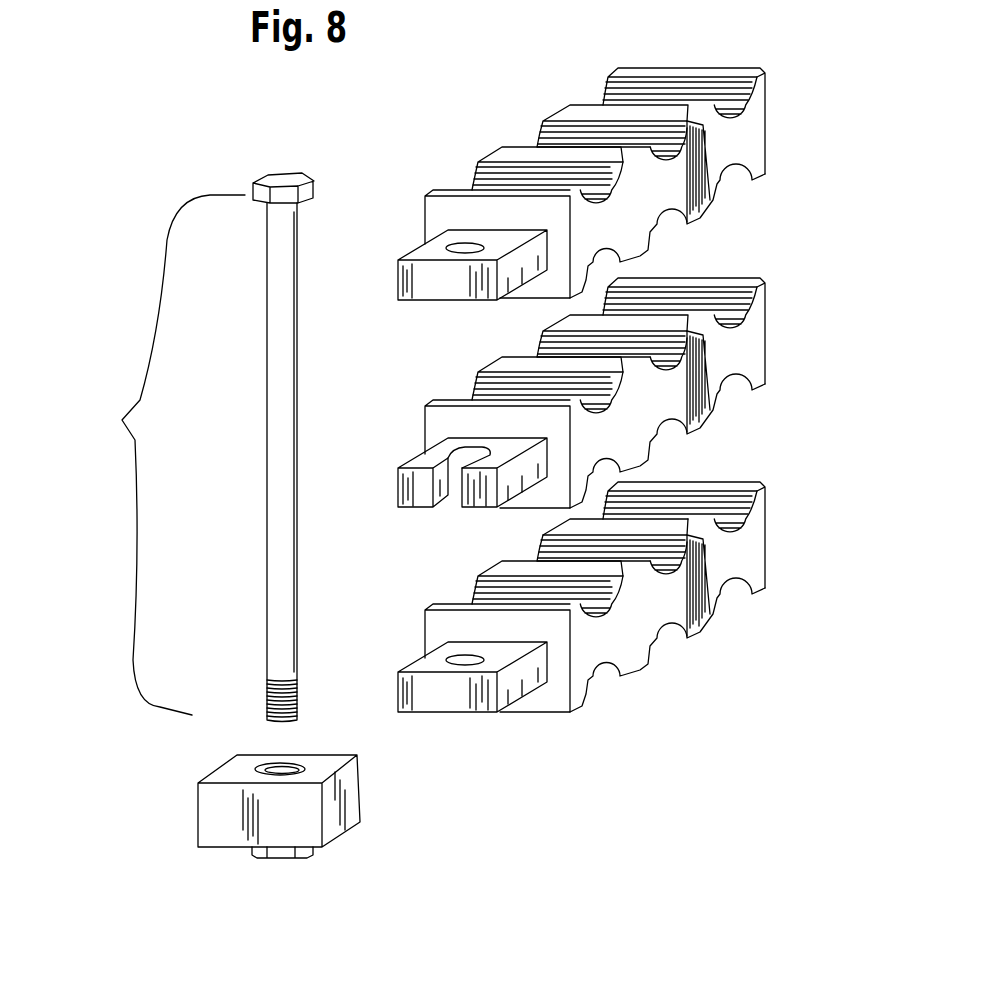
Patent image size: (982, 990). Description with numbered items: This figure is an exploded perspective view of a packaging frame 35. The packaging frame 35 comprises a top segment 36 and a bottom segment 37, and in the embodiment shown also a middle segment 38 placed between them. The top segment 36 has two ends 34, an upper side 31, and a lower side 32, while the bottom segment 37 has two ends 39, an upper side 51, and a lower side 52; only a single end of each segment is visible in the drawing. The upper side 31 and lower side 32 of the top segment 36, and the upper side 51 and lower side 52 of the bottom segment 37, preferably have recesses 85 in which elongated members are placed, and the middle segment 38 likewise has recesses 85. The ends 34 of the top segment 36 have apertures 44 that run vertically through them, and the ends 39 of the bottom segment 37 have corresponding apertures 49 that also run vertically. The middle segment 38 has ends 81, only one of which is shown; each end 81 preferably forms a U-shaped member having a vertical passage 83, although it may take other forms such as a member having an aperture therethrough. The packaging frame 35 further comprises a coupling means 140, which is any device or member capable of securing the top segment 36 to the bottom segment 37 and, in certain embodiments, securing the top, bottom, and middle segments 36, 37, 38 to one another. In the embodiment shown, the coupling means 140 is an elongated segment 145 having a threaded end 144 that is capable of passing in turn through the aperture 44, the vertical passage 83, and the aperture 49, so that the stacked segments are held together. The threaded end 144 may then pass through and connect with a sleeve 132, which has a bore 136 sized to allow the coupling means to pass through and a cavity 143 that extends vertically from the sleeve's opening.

The packaging frame 35 is at (173, 65).
The upper side 31 is at (667, 112).
The lower side 32 is at (643, 263).
The bottom segment 37 is at (622, 658).
The top segment 36 is at (745, 153).
The middle segment 38 is at (690, 400).
The upper side 51 is at (690, 525).
The lower side 52 is at (642, 665).
The recesses 85 is at (660, 152).
The ends 34 is at (422, 262).
The aperture 44 is at (465, 245).
The ends 81 is at (432, 465).
The vertical passage 83 is at (455, 467).
The ends 39 is at (402, 685).
The aperture 49 is at (463, 657).
The coupling means 140 is at (152, 455).
The elongated segment 145 is at (266, 338).
The threaded end 144 is at (265, 698).
The sleeve 132 is at (220, 808).
The bore 136 is at (262, 770).
The cavity 143 is at (280, 856).